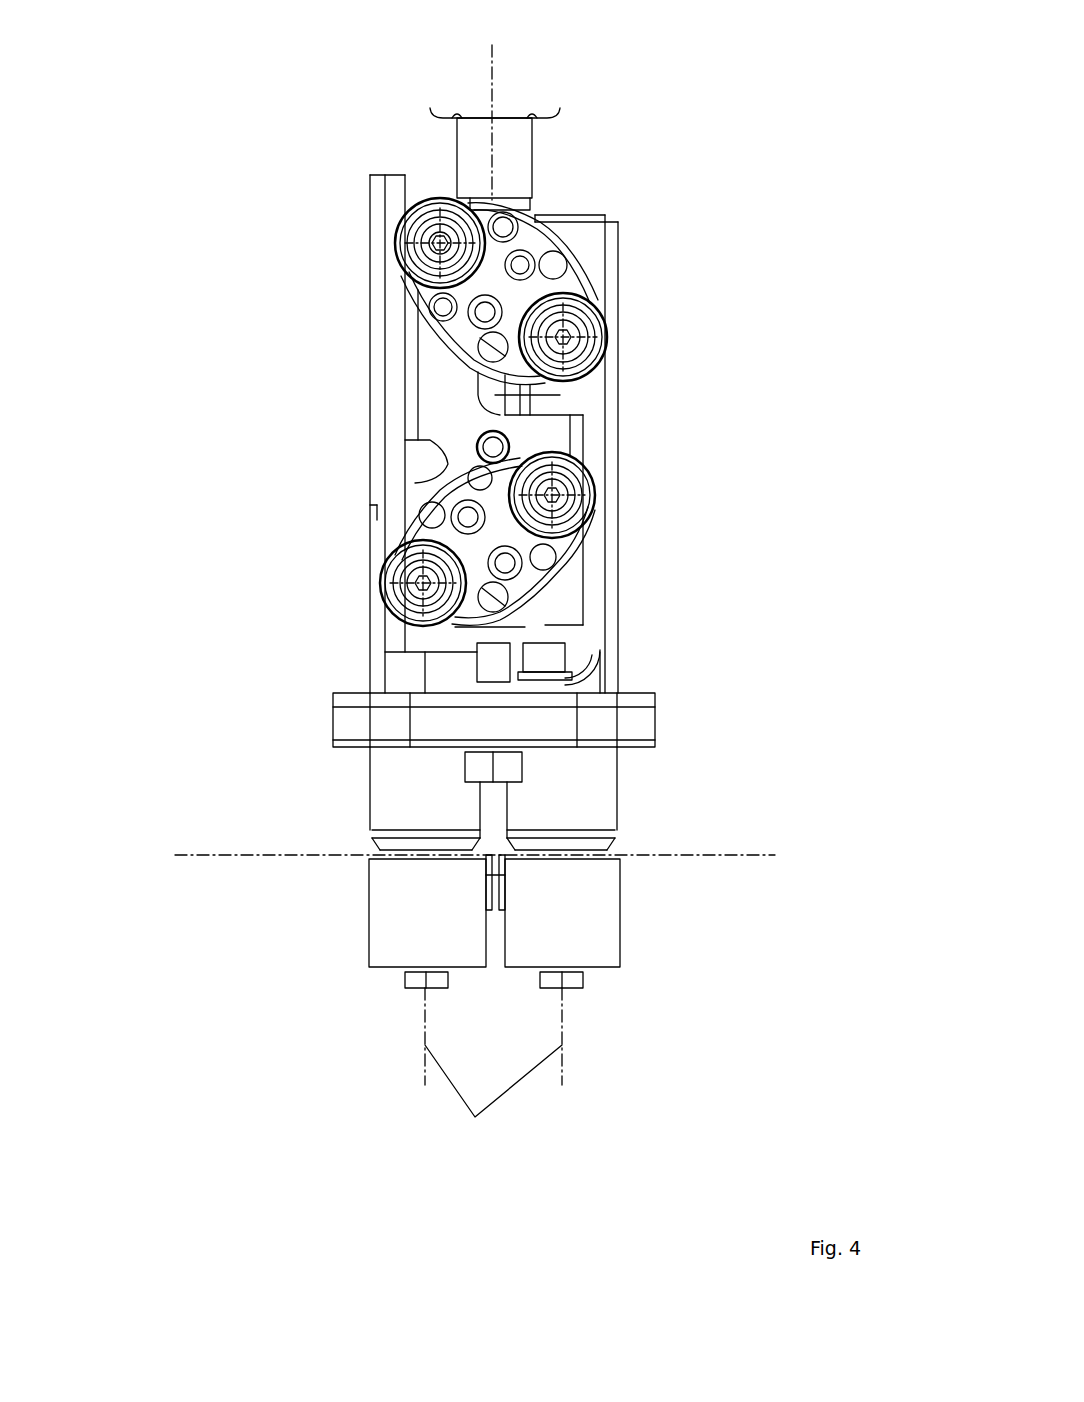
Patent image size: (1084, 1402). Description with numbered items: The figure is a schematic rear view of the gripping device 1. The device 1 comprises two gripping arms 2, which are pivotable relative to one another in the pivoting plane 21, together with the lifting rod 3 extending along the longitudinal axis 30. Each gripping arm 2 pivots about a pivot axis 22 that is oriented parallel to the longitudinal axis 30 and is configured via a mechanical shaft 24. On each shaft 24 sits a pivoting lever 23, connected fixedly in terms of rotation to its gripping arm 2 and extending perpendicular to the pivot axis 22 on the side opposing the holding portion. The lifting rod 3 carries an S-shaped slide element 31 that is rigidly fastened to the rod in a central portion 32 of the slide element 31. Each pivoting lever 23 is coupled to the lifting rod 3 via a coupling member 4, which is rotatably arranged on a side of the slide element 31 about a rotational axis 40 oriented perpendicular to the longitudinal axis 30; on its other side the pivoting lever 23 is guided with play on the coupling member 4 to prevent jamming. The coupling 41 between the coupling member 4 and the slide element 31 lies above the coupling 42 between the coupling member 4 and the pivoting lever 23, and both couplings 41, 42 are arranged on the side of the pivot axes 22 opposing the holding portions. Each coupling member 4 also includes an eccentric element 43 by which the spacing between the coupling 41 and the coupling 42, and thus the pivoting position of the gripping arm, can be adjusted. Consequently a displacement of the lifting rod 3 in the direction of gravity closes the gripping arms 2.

The device 1 is at (255, 108).
The gripping arm 2 is at (375, 850).
The lifting rod 3 is at (510, 156).
The coupling member 4 is at (575, 222).
The pivoting plane 21 is at (195, 854).
The pivot axis 22 is at (493, 1069).
The pivoting lever 23 is at (490, 459).
The shaft 24 is at (400, 790).
The longitudinal axis 30 is at (490, 80).
The slide element 31 is at (443, 370).
The central portion 32 is at (486, 437).
The rotational axis 40 is at (499, 373).
The coupling 41 is at (443, 246).
The coupling 42 is at (565, 340).
The eccentric element 43 is at (545, 292).